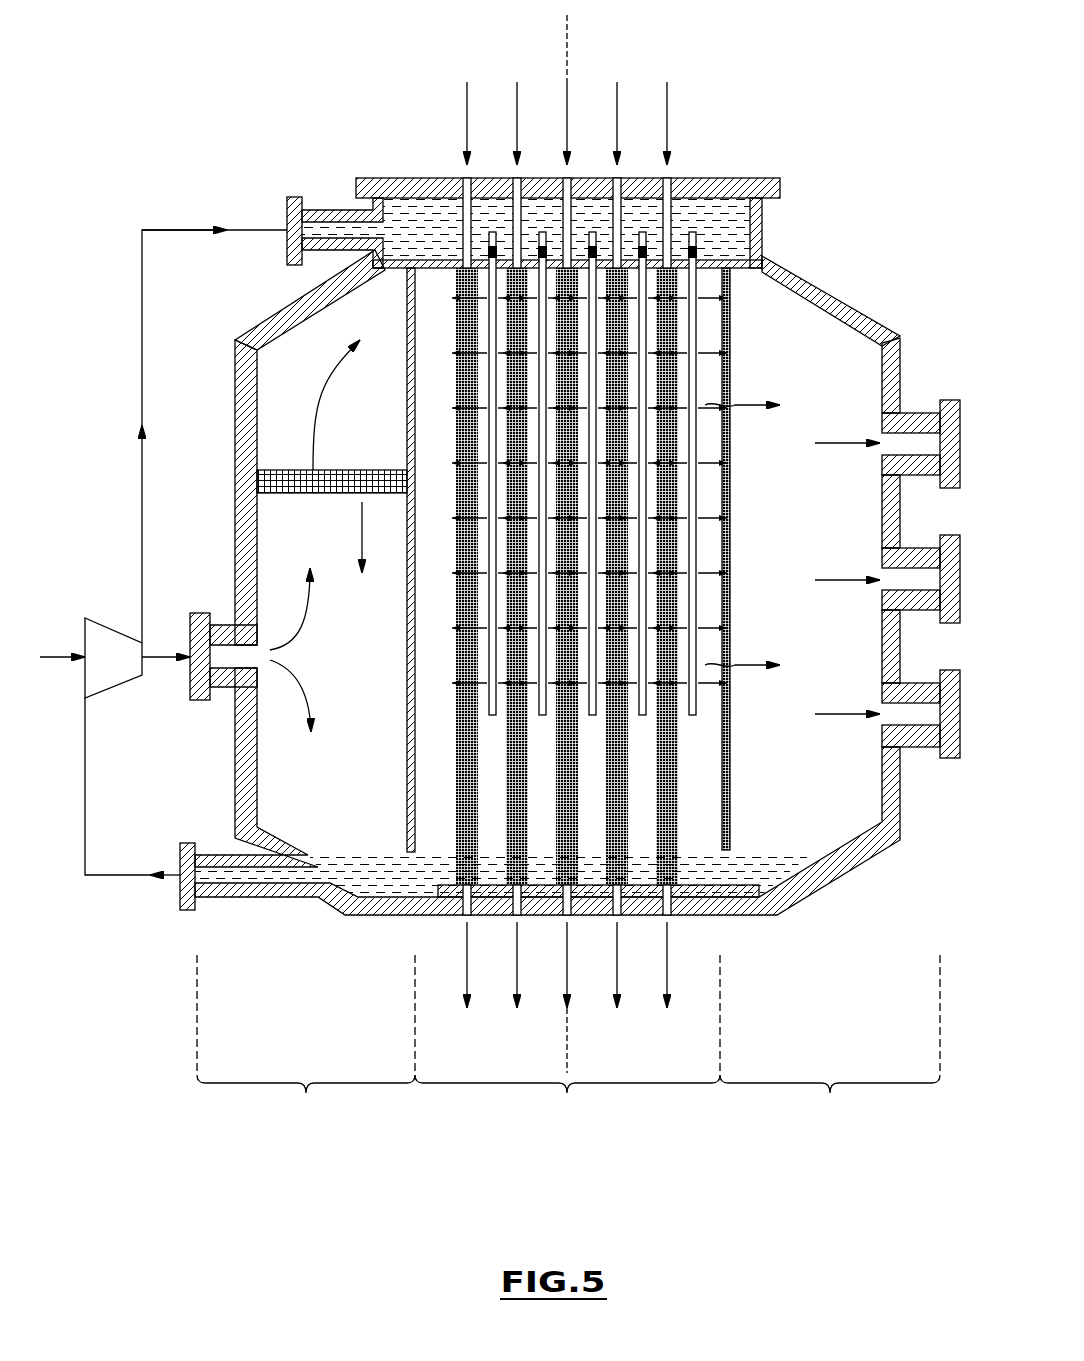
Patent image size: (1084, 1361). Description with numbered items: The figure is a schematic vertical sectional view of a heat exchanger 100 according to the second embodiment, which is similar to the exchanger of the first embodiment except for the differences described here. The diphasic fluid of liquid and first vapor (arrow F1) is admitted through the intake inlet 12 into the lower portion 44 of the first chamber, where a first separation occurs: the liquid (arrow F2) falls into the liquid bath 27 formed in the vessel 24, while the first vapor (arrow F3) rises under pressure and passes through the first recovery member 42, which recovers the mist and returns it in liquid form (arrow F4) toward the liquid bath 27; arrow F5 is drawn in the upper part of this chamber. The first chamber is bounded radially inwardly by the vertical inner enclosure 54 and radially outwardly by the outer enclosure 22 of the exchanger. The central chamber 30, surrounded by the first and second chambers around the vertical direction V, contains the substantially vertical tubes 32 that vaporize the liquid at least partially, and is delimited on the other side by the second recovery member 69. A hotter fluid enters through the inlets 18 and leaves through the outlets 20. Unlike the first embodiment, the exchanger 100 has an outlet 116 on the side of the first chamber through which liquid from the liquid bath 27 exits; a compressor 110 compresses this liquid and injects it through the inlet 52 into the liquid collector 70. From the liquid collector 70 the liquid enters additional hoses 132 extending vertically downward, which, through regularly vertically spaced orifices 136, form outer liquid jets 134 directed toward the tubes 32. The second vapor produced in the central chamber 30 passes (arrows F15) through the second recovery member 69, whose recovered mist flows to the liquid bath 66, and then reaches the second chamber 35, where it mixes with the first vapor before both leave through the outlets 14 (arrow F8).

The heat exchanger 100 is at (192, 130).
The compressor 110 is at (105, 637).
The intake inlet 12 is at (203, 613).
The outlet 116 is at (237, 897).
The inlet 52 is at (290, 212).
The vertical tubes 32 is at (520, 220).
The liquid collector 70 is at (718, 227).
The inlets 18 is at (686, 110).
The outer enclosure 22 is at (847, 305).
The outlets 14 is at (918, 413).
The additional hoses 132 is at (592, 315).
The outer liquid jets 134 is at (604, 505).
The orifices 136 is at (650, 615).
The first recovery member 42 is at (358, 485).
The inner enclosure 54 is at (407, 690).
The second recovery member 69 is at (730, 700).
The liquid bath 66 is at (760, 862).
The vessel 24 is at (348, 855).
The lower portion 44 is at (310, 821).
The liquid bath 27 is at (362, 870).
The outlets 20 is at (748, 965).
The central chamber 30 is at (567, 659).
The second chamber 35 is at (830, 1047).
The vertical direction V is at (568, 58).
The diphasic fluid flow arrow F1 is at (158, 668).
The liquid flow arrow F2 is at (300, 692).
The first vapor flow arrow F3 is at (288, 656).
The recovered mist flow arrow F4 is at (362, 530).
The flow arrow F5 is at (320, 385).
The first vapor outlet flow arrow F8 is at (827, 445).
The second vapor flow arrows F15 is at (745, 402).